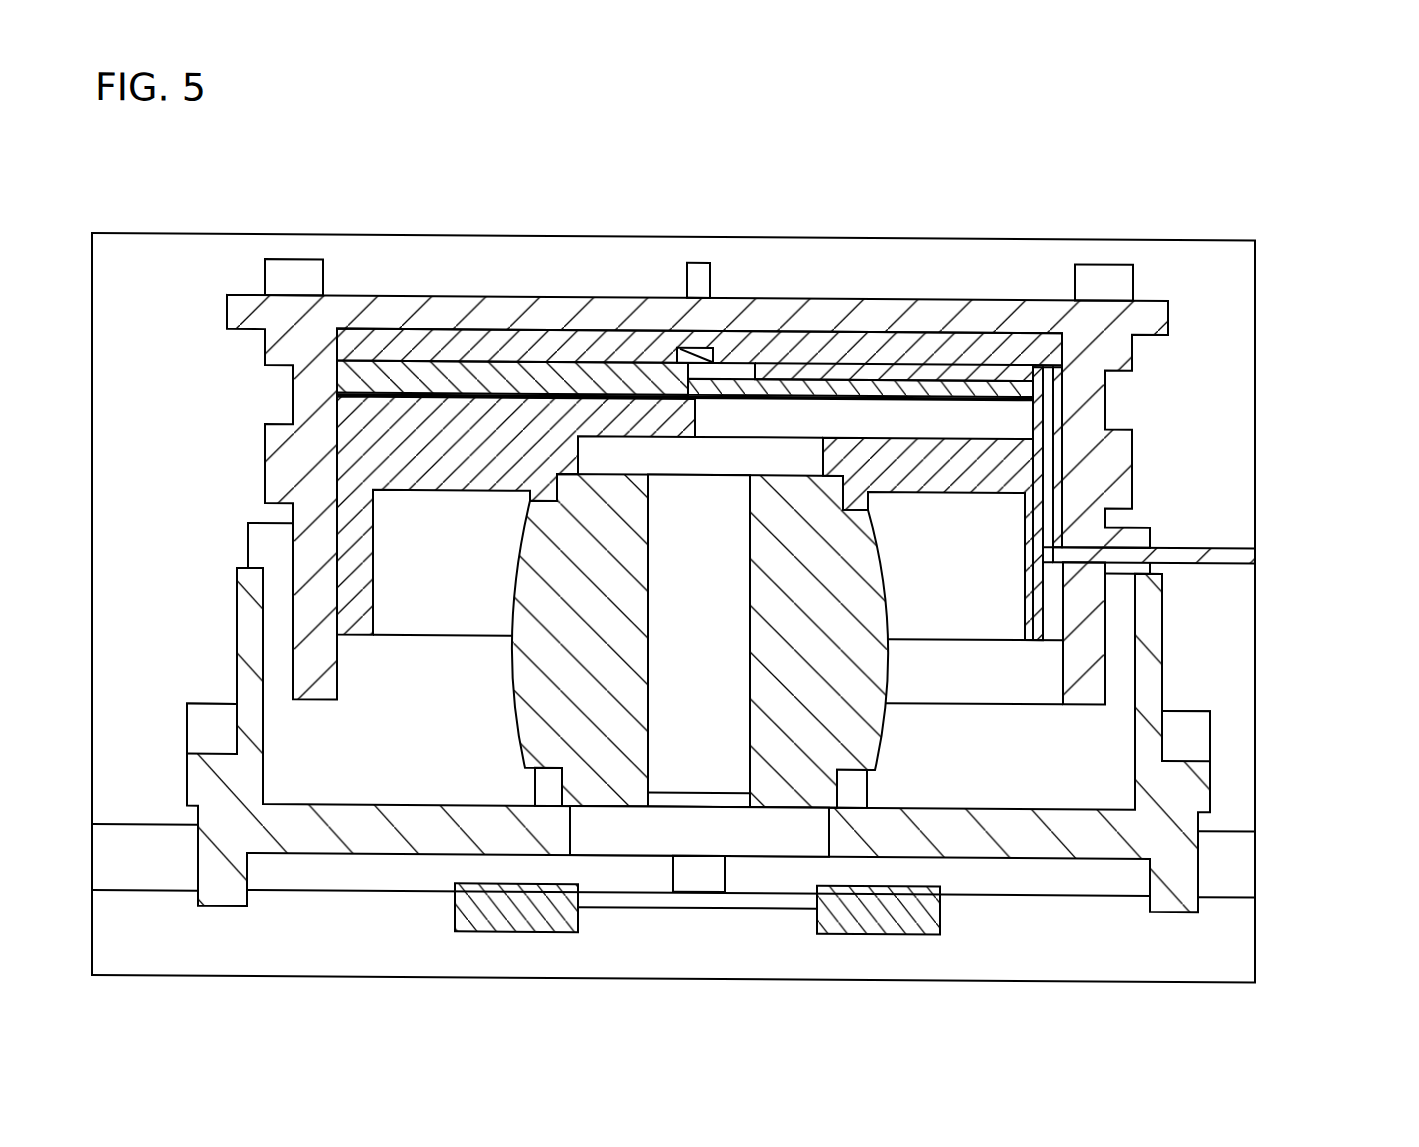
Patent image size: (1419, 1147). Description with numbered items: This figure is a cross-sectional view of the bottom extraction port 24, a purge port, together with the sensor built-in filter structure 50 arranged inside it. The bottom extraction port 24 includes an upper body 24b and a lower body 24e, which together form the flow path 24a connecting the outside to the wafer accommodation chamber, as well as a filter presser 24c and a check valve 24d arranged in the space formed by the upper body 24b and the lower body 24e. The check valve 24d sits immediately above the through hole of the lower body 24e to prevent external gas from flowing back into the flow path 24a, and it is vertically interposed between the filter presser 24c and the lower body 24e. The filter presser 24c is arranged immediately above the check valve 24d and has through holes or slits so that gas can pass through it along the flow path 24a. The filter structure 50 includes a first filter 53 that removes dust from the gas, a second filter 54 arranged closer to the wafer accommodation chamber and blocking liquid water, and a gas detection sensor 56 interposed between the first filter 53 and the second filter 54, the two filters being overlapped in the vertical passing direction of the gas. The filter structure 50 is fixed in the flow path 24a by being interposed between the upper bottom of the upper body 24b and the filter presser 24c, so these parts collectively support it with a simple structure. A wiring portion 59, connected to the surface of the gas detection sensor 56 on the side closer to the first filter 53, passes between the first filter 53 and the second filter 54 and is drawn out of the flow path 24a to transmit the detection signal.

The bottom extraction port 24 is at (801, 598).
The flow path 24a is at (952, 420).
The upper body 24b is at (1093, 343).
The filter presser 24c is at (1005, 465).
The check valve 24d is at (858, 575).
The lower body 24e is at (1165, 795).
The sensor built-in filter structure 50 is at (699, 262).
The first filter 53 is at (572, 378).
The second filter 54 is at (623, 343).
The gas detection sensor 56 is at (698, 352).
The wiring portion 59 is at (757, 376).